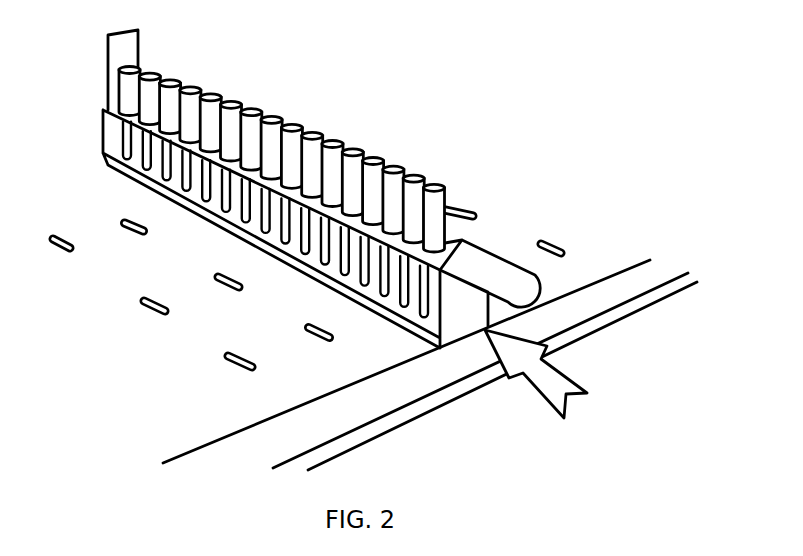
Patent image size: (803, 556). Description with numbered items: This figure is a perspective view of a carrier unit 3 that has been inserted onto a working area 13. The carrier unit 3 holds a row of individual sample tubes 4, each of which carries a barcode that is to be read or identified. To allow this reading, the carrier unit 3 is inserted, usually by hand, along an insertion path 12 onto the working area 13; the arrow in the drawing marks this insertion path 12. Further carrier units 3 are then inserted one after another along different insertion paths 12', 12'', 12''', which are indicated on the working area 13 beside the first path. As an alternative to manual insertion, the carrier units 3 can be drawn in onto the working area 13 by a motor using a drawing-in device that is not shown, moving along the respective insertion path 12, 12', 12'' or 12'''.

The carrier unit 3 is at (482, 267).
The sample tube 4 is at (332, 137).
The insertion path 12 is at (576, 374).
The insertion path 12' is at (607, 208).
The insertion path 12'' is at (262, 323).
The insertion path 12''' is at (184, 358).
The working area 13 is at (337, 395).